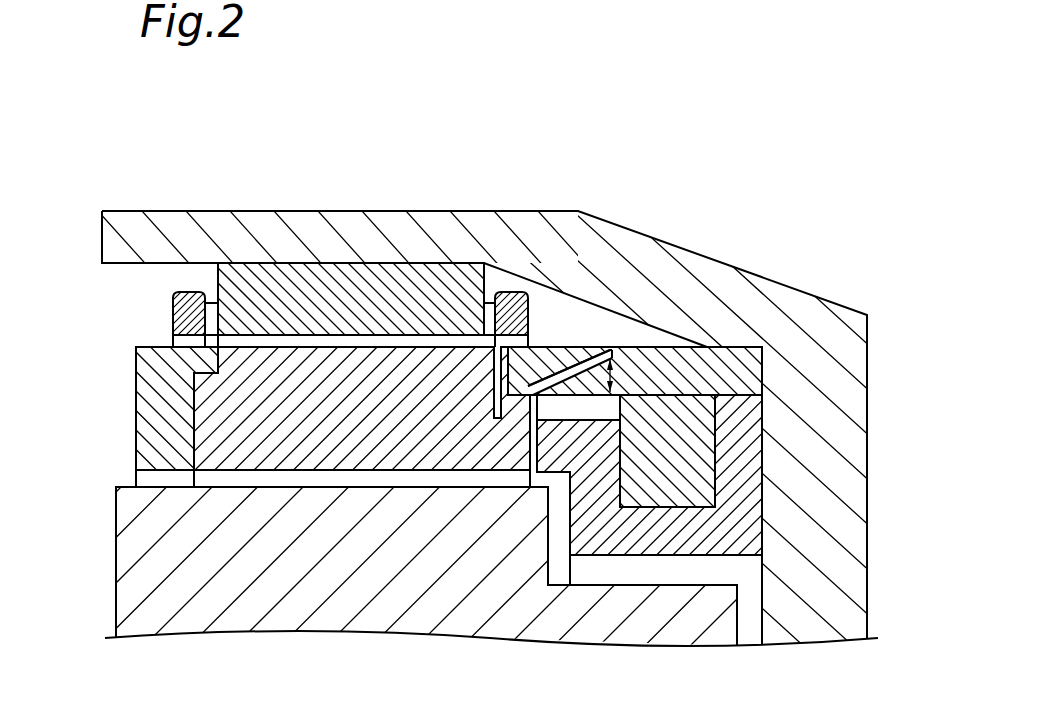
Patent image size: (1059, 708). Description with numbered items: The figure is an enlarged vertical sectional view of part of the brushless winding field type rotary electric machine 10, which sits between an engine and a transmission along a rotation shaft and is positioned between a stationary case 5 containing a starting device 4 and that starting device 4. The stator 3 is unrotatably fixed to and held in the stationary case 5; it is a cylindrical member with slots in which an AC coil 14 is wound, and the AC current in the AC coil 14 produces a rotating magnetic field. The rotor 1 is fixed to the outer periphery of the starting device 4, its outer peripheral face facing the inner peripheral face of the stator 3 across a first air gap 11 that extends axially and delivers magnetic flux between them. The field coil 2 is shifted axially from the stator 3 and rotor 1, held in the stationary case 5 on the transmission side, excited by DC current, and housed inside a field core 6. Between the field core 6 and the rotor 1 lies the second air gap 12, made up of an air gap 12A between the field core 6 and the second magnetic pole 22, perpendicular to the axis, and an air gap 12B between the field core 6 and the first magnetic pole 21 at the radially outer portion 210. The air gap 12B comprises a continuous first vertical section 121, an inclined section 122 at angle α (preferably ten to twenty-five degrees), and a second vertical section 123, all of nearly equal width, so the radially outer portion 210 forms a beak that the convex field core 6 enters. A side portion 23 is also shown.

The rotary electric machine 10 is at (60, 192).
The rotor 1 is at (128, 432).
The field coil 2 is at (690, 441).
The stator 3 is at (160, 303).
The starting device 4 is at (136, 564).
The stationary case 5 is at (222, 233).
The field core 6 is at (740, 475).
The first air gap 11 is at (277, 345).
The second air gap 12 is at (596, 352).
The air gap 12A is at (535, 397).
The air gap 12B is at (612, 348).
The AC coil 14 is at (190, 293).
The first magnetic pole 21 is at (523, 372).
The second magnetic pole 22 is at (353, 377).
The side portion 23 is at (158, 407).
The first vertical section 121 is at (523, 394).
The inclined section 122 is at (612, 355).
The second vertical section 123 is at (613, 347).
The radially outer portion 210 is at (553, 370).